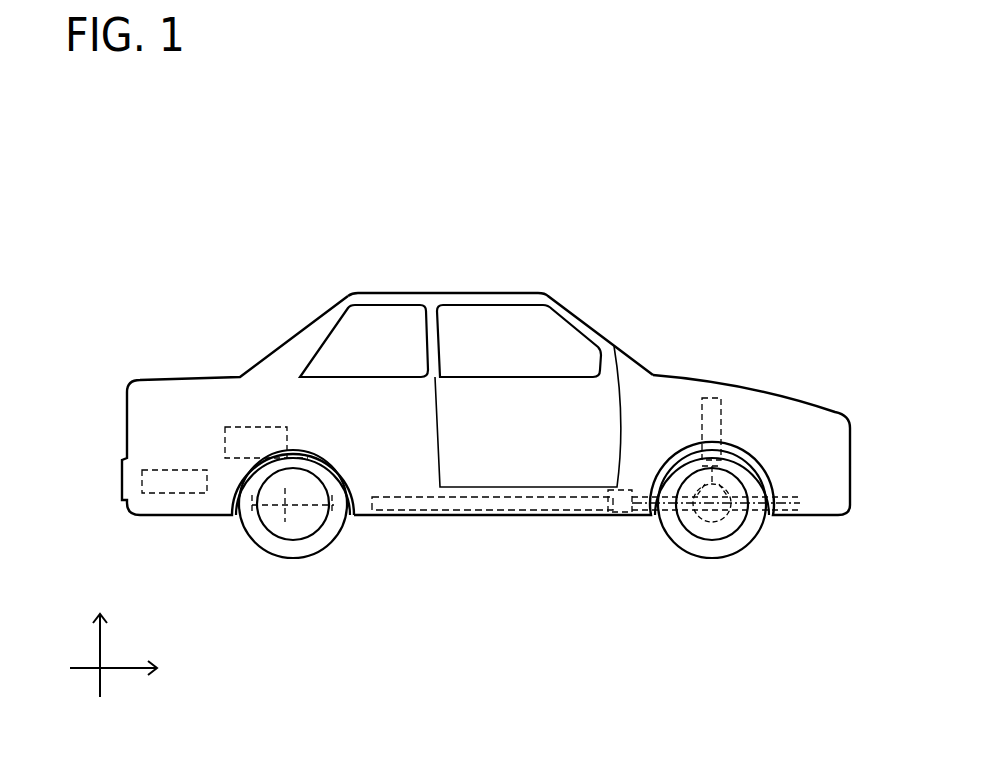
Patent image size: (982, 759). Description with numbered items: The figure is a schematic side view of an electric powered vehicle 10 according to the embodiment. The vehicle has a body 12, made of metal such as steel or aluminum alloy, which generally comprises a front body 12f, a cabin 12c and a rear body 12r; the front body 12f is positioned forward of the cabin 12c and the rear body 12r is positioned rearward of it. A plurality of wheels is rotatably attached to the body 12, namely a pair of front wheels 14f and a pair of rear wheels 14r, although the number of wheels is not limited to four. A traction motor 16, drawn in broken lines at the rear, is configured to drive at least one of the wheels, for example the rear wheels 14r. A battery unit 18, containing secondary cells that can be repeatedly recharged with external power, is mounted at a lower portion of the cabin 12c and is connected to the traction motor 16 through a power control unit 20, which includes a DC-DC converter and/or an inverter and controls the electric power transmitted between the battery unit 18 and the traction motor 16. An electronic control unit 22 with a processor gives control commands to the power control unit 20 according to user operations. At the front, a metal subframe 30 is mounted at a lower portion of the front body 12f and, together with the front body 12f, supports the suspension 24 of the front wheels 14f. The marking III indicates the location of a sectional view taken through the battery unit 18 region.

The electric powered vehicle 10 is at (165, 262).
The body 12 is at (412, 291).
The rear body 12r is at (205, 352).
The cabin 12c is at (556, 278).
The front body 12f is at (764, 362).
The rear wheels 14r is at (333, 536).
The front wheels 14f is at (704, 548).
The traction motor 16 is at (283, 520).
The battery unit 18 is at (508, 512).
The power control unit 20 is at (222, 460).
The electronic control unit 22 is at (142, 481).
The suspension 24 is at (735, 488).
The subframe 30 is at (758, 522).
The section line III is at (626, 513).